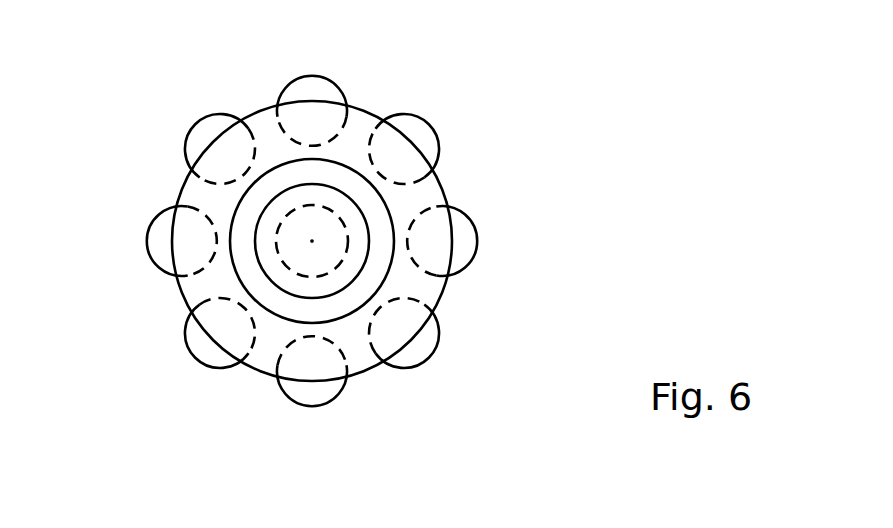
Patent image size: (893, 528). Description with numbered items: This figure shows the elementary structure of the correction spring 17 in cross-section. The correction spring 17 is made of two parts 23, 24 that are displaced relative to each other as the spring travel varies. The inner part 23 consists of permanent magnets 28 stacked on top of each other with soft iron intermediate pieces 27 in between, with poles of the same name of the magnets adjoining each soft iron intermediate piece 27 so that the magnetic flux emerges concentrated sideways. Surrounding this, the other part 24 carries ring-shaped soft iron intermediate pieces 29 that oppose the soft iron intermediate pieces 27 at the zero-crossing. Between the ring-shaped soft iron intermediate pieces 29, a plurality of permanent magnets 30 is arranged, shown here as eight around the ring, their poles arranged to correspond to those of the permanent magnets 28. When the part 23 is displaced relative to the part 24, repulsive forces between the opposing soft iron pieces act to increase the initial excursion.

The correction spring 17 is at (458, 93).
The part of the correction spring 23 is at (330, 223).
The other part of the correction spring 24 is at (258, 108).
The soft iron intermediate piece 27 is at (288, 281).
The permanent magnet 28 is at (412, 259).
The ring-shaped soft iron intermediate piece 29 is at (362, 352).
The permanent magnet 30 is at (183, 332).